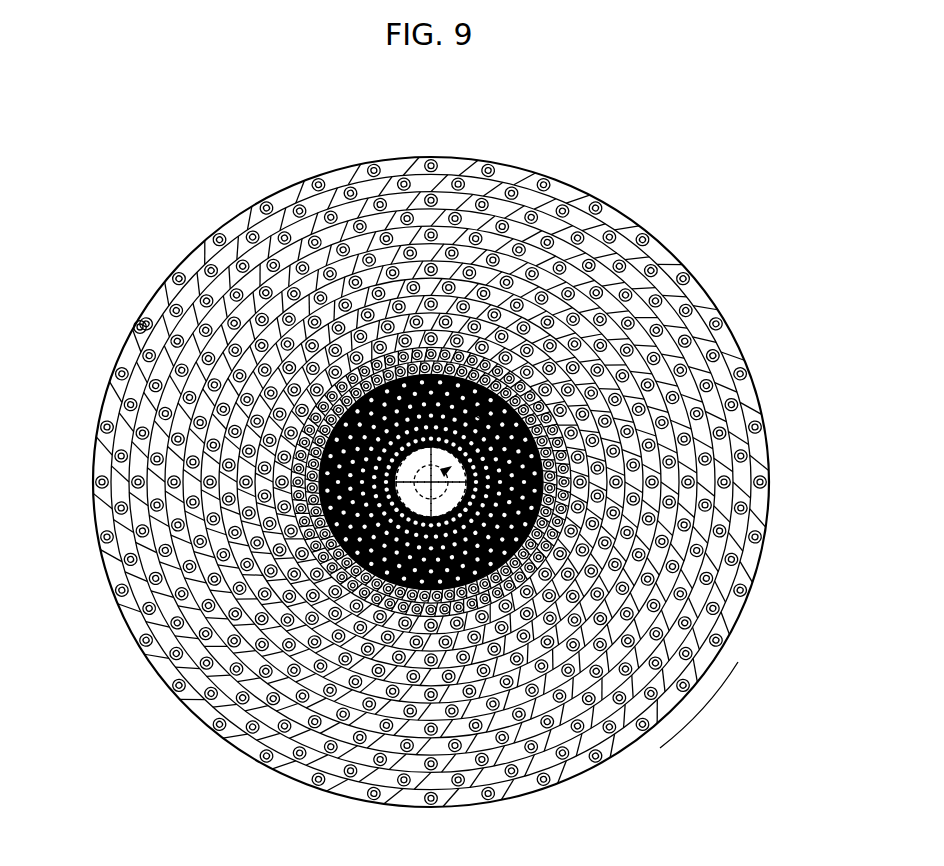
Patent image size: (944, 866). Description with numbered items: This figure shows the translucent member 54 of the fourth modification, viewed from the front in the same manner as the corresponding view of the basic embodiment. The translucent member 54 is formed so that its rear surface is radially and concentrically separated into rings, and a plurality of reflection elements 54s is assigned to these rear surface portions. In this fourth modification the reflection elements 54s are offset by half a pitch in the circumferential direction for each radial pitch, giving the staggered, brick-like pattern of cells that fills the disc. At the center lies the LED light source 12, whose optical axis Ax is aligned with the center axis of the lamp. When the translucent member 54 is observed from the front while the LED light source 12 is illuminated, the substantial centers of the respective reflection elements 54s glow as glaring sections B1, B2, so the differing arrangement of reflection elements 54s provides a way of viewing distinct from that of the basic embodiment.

The translucent member 54 is at (745, 353).
The reflection elements 54s is at (695, 690).
The LED light source 12 is at (466, 464).
The optical axis Ax is at (418, 505).
The glaring section B1 is at (472, 405).
The glaring section B2 is at (143, 314).